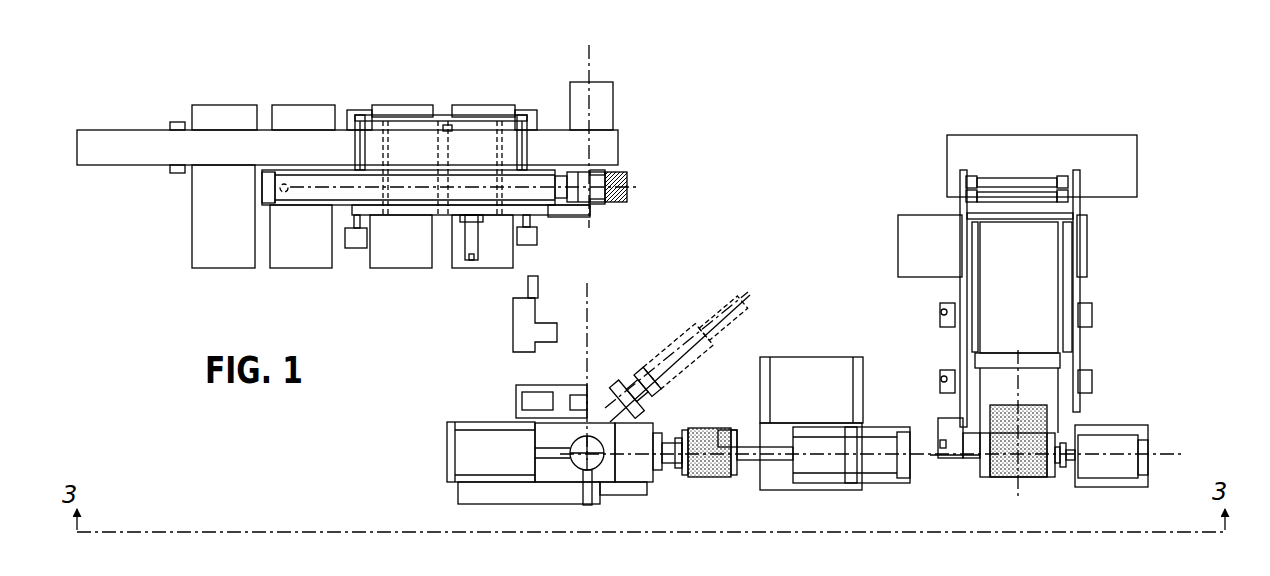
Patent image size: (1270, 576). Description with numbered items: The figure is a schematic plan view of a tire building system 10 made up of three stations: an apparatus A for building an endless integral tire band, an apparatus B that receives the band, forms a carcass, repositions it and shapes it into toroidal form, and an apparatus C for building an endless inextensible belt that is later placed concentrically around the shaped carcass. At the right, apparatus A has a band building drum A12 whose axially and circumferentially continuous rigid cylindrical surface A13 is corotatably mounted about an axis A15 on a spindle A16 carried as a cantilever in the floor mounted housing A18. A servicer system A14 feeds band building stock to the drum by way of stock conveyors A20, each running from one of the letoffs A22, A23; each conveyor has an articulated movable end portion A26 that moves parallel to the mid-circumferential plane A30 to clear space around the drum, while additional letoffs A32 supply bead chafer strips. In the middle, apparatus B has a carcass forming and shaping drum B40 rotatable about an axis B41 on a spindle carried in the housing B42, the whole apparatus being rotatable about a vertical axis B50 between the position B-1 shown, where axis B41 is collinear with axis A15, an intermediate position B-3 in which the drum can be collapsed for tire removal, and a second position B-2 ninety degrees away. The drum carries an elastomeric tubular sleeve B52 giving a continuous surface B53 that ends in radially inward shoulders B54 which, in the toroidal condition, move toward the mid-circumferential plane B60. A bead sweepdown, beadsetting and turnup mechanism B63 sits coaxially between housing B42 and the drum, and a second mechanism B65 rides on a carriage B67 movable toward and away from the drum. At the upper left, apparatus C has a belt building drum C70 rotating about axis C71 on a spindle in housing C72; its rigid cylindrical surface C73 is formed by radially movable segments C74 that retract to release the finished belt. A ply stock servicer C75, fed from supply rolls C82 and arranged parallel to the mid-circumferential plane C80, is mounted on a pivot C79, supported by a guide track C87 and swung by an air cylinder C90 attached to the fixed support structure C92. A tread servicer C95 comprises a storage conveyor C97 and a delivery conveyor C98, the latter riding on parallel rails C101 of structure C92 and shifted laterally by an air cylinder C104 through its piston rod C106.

The system 10 is at (756, 177).
The apparatus A is at (1094, 342).
The apparatus B is at (743, 346).
The apparatus C is at (632, 131).
The position B-1 is at (743, 488).
The second position B-2 is at (590, 292).
The intermediate position B-3 is at (652, 362).
The band building drum A12 is at (985, 458).
The rigid cylindrical surface A13 is at (993, 470).
The servicer system A14 is at (1084, 284).
The axis A15 is at (1183, 454).
The spindle A16 is at (1080, 456).
The housing A18 is at (1128, 440).
The stock conveyors A20 is at (1054, 237).
The letoff A22 is at (1130, 150).
The letoff A23 is at (1086, 250).
The articulated movable end portion A26 is at (1053, 415).
The mid-circumferential plane A30 is at (1019, 478).
The additional letoffs A32 is at (1093, 311).
The carcass forming and shaping drum B40 is at (730, 480).
The axis B41 is at (776, 470).
The housing B42 is at (470, 442).
The vertical axis B50 is at (584, 459).
The elastomeric tubular sleeve B52 is at (760, 400).
The continuous surface B53 is at (734, 428).
The shoulders B54 is at (684, 476).
The mid-circumferential plane B60 is at (708, 428).
The bead sweepdown, beadsetting, and turnup mechanism B63 is at (587, 500).
The second bead sweepdown, beadsetting, and turnup mechanism B65 is at (815, 473).
The carriage B67 is at (870, 425).
The belt building drum C70 is at (612, 206).
The axis C71 is at (591, 50).
The housing C72 is at (613, 92).
The rigid cylindrical surface C73 is at (626, 201).
The radially movable segments C74 is at (612, 172).
The ply stock servicer C75 is at (288, 214).
The pivot C79 is at (266, 190).
The mid-circumferential plane C80 is at (628, 187).
The supply rolls C82 is at (200, 248).
The guide track C87 is at (531, 216).
The air cylinder C90 is at (469, 262).
The fixed support structure C92 is at (419, 219).
The tread servicer C95 is at (117, 128).
The storage conveyor C97 is at (166, 140).
The delivery conveyor C98 is at (480, 128).
The parallel rails C101 is at (386, 137).
The air cylinder C104 is at (446, 124).
The piston rod C106 is at (449, 215).